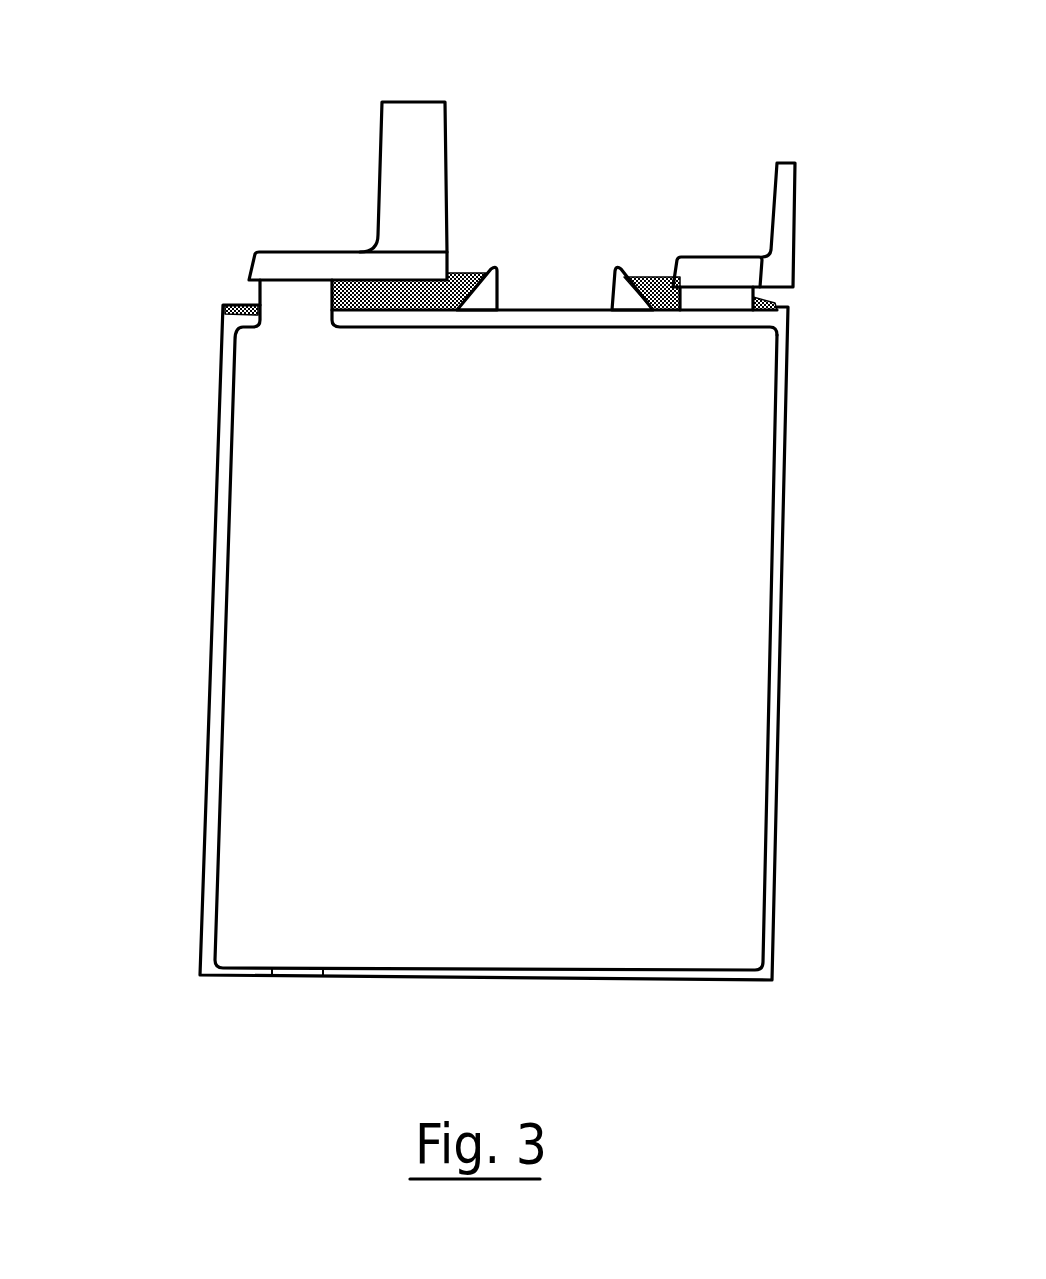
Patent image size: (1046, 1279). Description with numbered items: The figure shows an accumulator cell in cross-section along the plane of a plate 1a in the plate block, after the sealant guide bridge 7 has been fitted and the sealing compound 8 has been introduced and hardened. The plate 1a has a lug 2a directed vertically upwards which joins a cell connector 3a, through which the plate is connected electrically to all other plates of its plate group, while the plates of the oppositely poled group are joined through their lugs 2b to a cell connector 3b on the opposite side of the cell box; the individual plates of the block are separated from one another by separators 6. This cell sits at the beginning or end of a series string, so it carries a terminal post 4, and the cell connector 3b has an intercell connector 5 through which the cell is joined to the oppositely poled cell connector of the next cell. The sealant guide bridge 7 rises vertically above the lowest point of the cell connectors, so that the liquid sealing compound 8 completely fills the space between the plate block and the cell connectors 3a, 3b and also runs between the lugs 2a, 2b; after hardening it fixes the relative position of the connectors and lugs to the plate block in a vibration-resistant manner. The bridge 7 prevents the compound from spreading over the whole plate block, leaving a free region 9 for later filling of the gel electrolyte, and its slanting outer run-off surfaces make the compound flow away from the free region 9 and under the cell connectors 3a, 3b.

The plate 1a is at (308, 447).
The lug 2a is at (288, 297).
The lug 2b is at (733, 302).
The cell connector 3a is at (292, 265).
The cell connector 3b is at (715, 273).
The terminal post 4 is at (405, 157).
The intercell connector 5 is at (785, 198).
The separator 6 is at (507, 317).
The sealant guide bridge 7 is at (484, 288).
The sealing compound 8 is at (368, 297).
The free region 9 is at (557, 283).